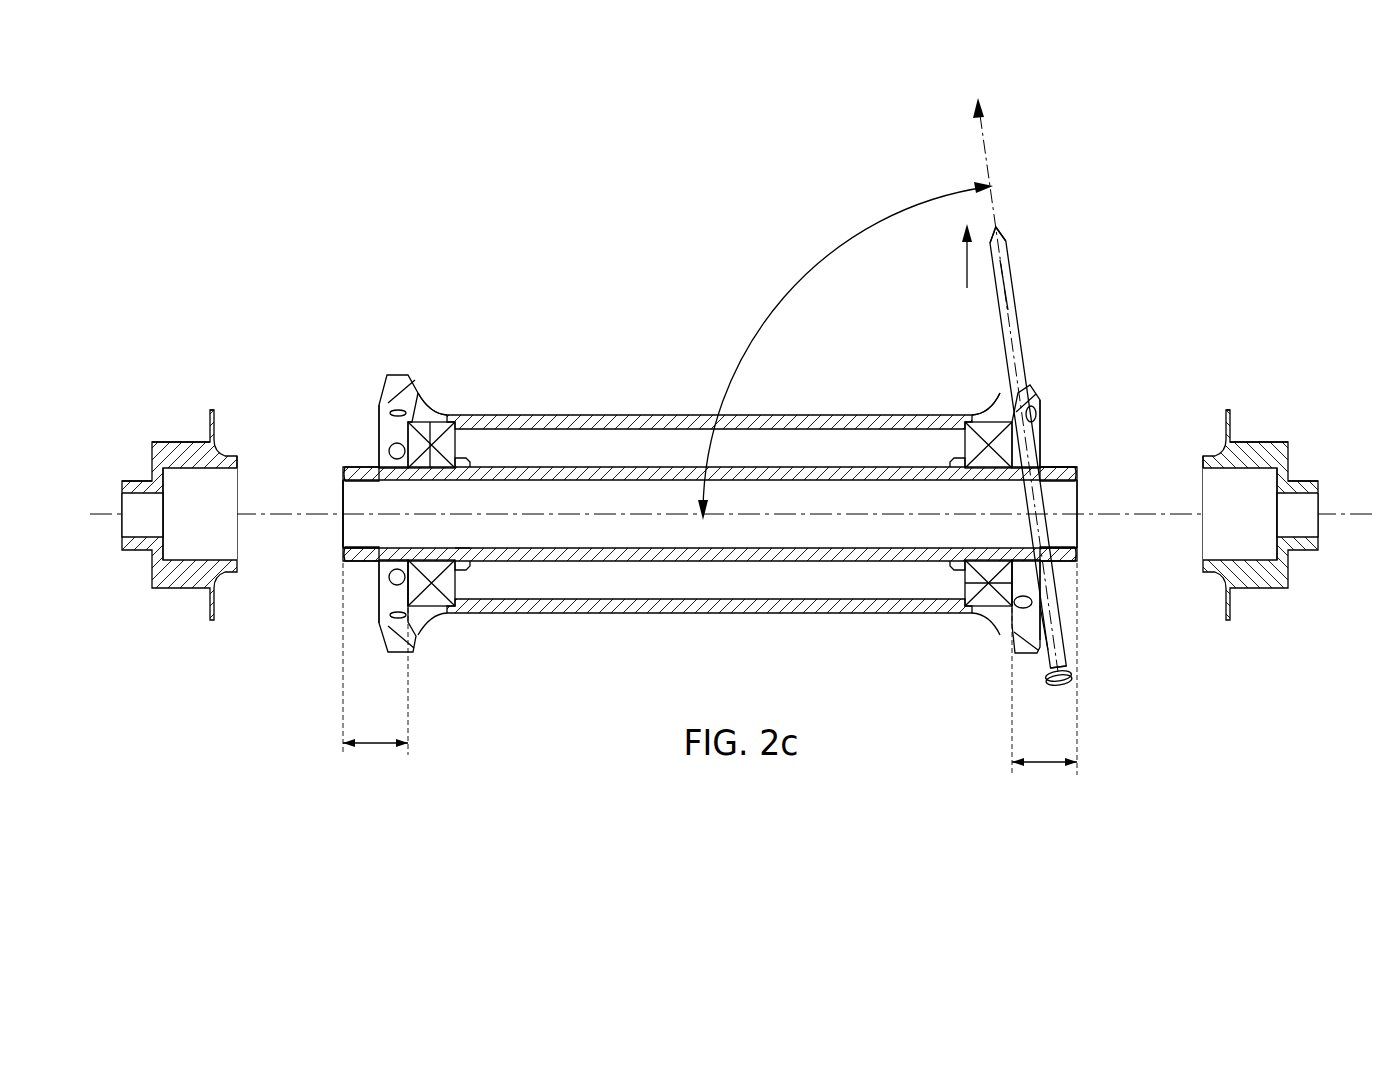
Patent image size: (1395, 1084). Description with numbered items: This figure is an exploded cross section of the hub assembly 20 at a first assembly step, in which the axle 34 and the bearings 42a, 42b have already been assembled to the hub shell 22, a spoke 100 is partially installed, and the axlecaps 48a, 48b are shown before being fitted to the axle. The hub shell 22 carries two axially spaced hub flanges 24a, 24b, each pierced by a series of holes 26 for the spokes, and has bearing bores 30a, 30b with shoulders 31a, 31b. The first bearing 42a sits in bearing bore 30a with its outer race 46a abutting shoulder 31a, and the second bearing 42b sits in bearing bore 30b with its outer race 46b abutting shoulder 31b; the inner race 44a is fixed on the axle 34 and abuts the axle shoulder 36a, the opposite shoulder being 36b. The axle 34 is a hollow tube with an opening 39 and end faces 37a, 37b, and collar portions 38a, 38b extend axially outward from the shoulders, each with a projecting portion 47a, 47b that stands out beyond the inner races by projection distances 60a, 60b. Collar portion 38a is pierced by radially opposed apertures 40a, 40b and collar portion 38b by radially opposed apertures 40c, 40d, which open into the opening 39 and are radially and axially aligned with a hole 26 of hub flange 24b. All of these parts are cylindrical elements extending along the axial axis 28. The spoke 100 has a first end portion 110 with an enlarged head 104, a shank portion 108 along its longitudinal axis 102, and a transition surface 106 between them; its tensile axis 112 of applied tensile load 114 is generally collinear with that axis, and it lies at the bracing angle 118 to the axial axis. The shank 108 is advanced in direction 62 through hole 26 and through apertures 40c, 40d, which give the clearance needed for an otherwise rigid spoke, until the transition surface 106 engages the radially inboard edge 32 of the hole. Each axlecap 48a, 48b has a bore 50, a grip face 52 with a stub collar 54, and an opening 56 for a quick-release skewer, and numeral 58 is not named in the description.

The hub assembly 20 is at (1312, 212).
The hub shell 22 is at (805, 414).
The hub flange 24a is at (407, 387).
The hub flange 24b is at (1003, 645).
The holes 26 is at (368, 469).
The axial axis 28 is at (107, 512).
The bearing bore 30a is at (457, 443).
The bearing bore 30b is at (966, 450).
The shoulder 31a is at (448, 413).
The shoulder 31b is at (995, 607).
The radially inboard edge 32 is at (1047, 435).
The axle 34 is at (657, 465).
The shoulder 36a is at (430, 615).
The shoulder 36b is at (985, 418).
The end face 37a is at (333, 537).
The end face 37b is at (1078, 492).
The collar portion 38a is at (356, 470).
The collar portion 38b is at (1076, 470).
The opening 39 is at (335, 490).
The aperture 40a is at (360, 468).
The aperture 40b is at (366, 562).
The aperture 40c is at (1046, 408).
The aperture 40d is at (1078, 600).
The bearing 42a is at (410, 618).
The bearing 42b is at (978, 608).
The inner race 44a is at (447, 623).
The outer race 46a is at (426, 410).
The outer race 46b is at (1002, 412).
The projecting portion 47a is at (352, 562).
The projecting portion 47b is at (1068, 578).
The axlecap 48a is at (182, 440).
The axlecap 48b is at (1240, 437).
The bore 50 is at (217, 548).
The grip face 52 is at (150, 453).
The stub collar 54 is at (143, 550).
The opening 56 is at (126, 527).
The end cap abutment 58 is at (237, 460).
The projection distance 60a is at (380, 750).
The projection distance 60b is at (1050, 770).
The direction 62 is at (965, 270).
The spoke 100 is at (1009, 255).
The longitudinal axis 102 is at (990, 179).
The enlarged head 104 is at (1067, 686).
The transition surface 106 is at (1073, 672).
The shank portion 108 is at (1017, 297).
The first end portion 110 is at (1072, 615).
The tensile axis 112 is at (996, 209).
The applied tensile load 114 is at (985, 138).
The bracing angle 118 is at (803, 278).